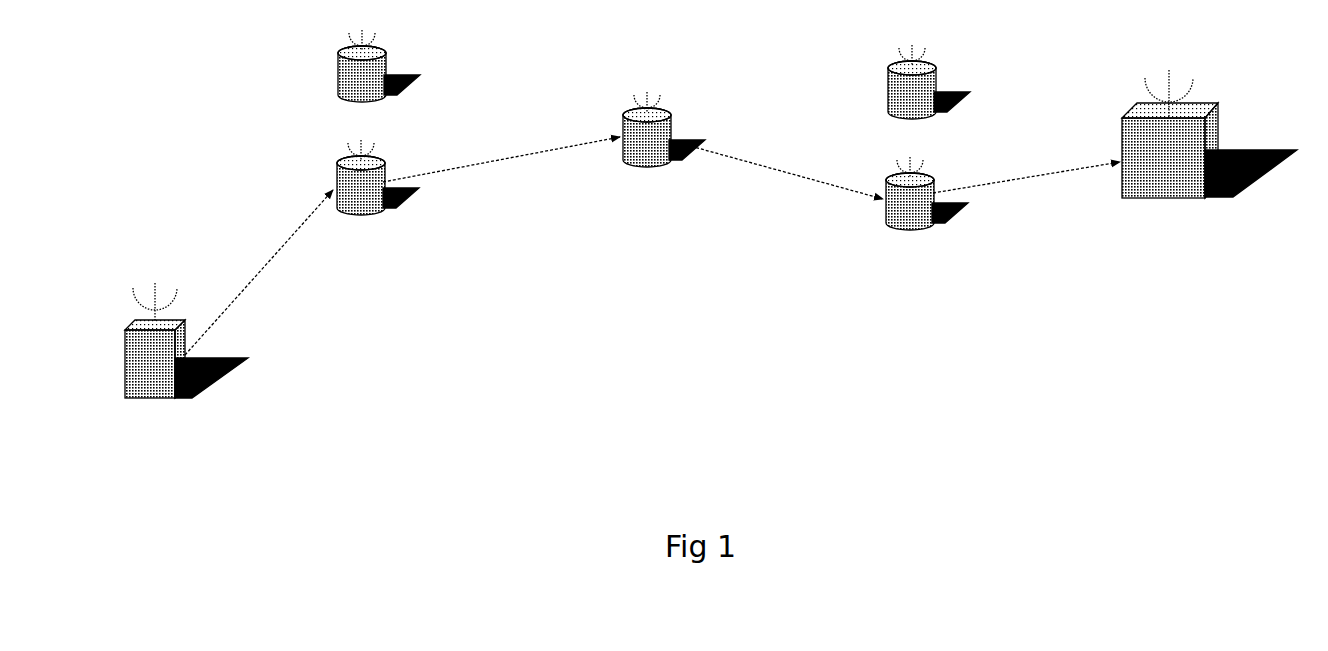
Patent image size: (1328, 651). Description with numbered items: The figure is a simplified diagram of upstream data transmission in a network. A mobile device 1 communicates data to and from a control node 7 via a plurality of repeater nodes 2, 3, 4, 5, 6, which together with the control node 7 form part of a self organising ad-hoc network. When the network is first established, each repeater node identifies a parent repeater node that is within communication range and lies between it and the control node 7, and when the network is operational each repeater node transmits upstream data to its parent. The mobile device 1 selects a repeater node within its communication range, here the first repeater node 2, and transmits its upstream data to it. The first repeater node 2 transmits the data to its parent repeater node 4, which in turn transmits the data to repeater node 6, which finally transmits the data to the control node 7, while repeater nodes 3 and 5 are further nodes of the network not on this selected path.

The mobile device 1 is at (146, 400).
The first repeater node 2 is at (357, 214).
The repeater node 3 is at (356, 100).
The parent repeater node 4 is at (651, 166).
The repeater node 5 is at (921, 118).
The repeater node 6 is at (912, 230).
The control node 7 is at (1180, 202).